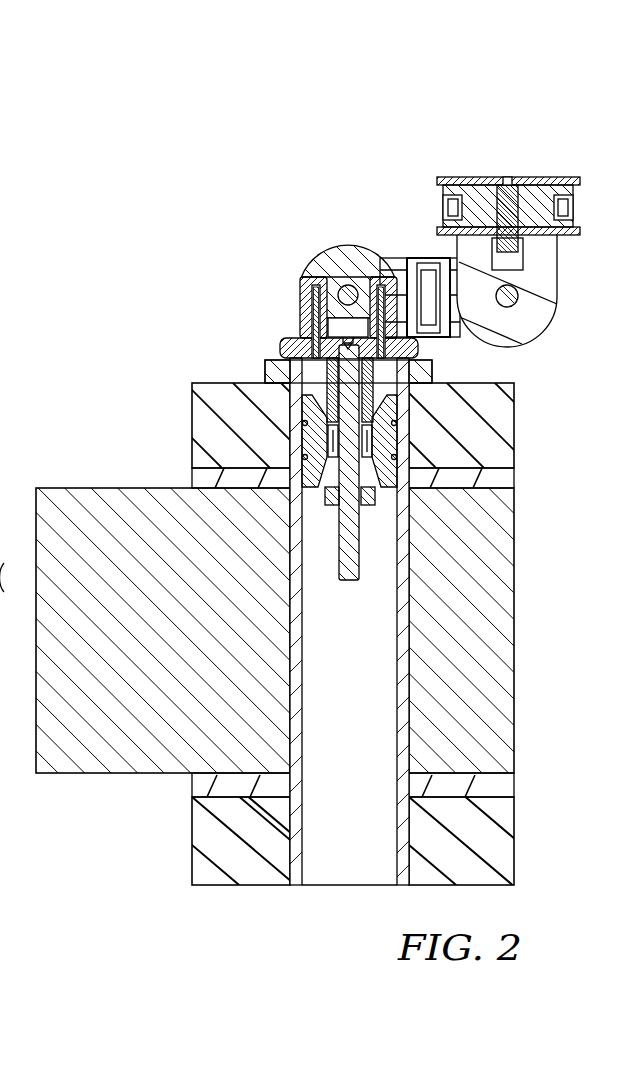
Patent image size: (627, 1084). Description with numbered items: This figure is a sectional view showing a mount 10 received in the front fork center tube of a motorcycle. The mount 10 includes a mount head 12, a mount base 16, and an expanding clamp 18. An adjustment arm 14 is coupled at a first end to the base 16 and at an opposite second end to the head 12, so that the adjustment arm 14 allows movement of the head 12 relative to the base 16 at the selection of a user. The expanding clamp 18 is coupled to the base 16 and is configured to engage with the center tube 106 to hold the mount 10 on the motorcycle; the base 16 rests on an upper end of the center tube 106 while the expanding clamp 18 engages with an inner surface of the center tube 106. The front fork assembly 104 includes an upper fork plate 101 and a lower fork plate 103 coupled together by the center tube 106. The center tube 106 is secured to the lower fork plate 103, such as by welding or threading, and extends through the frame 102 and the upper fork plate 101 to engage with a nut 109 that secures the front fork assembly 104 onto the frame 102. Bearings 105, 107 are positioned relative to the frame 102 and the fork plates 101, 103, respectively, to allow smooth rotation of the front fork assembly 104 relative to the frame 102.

The mount 10 is at (317, 311).
The mount head 12 is at (498, 162).
The adjustment arm 14 is at (397, 243).
The mount base 16 is at (288, 305).
The expanding clamp 18 is at (216, 436).
The upper fork plate 101 is at (522, 443).
The frame 102 is at (62, 758).
The lower fork plate 103 is at (180, 867).
The front fork assembly 104 is at (313, 650).
The bearing 105 is at (180, 470).
The center tube 106 is at (357, 827).
The bearing 107 is at (177, 783).
The nut 109 is at (440, 368).